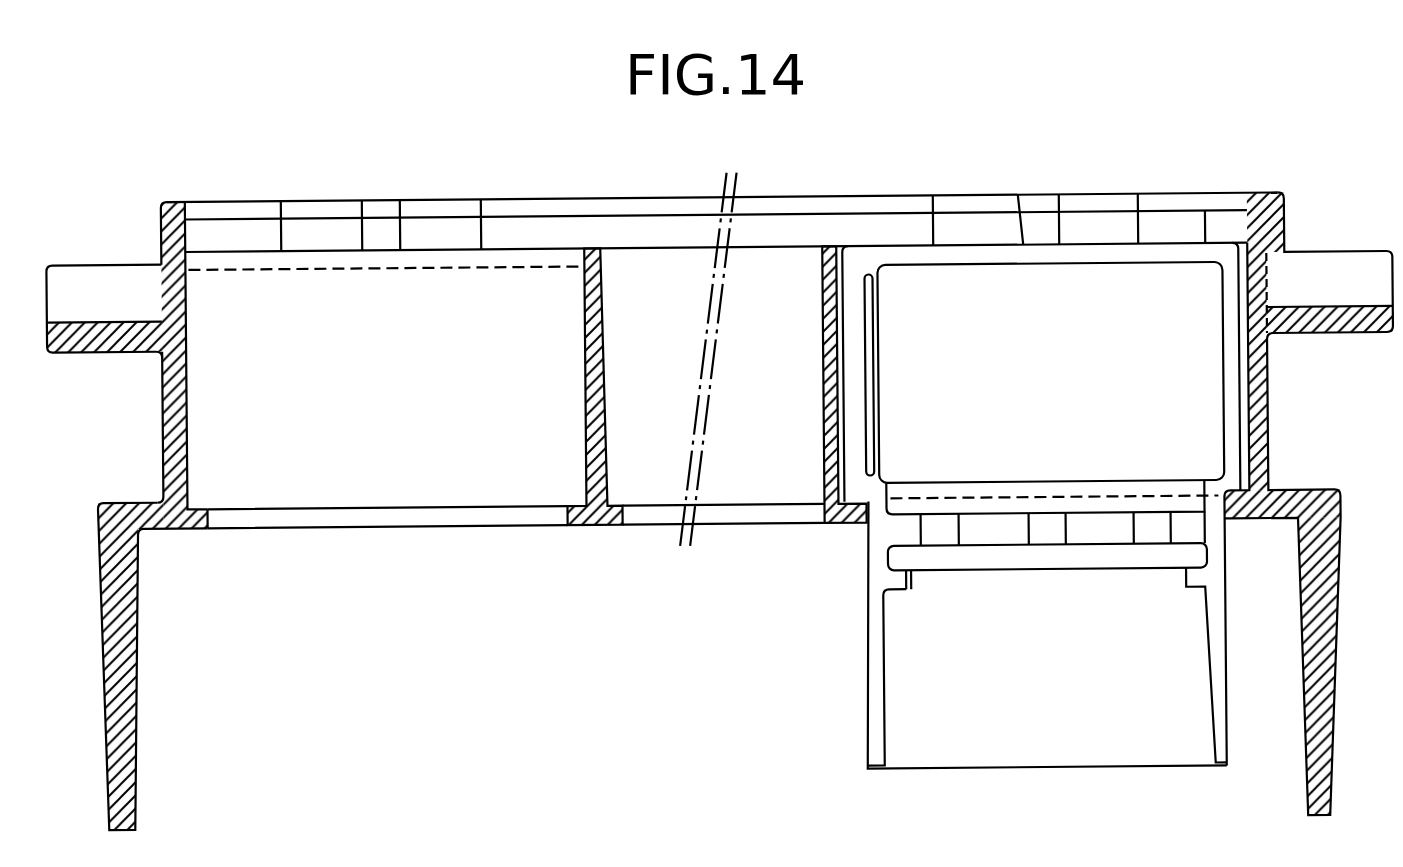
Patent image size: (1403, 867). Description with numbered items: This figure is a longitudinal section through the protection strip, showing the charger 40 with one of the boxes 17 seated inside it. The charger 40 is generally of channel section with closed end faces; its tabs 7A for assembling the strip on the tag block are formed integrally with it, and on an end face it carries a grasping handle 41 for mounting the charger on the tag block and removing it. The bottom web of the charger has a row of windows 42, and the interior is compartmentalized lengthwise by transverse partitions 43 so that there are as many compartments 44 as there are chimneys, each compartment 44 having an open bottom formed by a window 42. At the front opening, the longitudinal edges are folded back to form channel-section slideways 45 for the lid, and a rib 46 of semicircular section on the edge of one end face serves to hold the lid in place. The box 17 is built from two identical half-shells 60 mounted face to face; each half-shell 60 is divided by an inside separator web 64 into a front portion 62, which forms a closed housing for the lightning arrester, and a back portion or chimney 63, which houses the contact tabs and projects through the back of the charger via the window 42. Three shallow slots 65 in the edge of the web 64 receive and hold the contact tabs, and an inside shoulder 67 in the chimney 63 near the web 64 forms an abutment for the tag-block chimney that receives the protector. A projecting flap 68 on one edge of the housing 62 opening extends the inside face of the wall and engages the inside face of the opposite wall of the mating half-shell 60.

The tabs 7A is at (116, 655).
The box 17 is at (895, 240).
The charger 40 is at (151, 243).
The grasping handles 41 is at (123, 328).
The windows 42 is at (392, 516).
The transverse partitions 43 is at (608, 292).
The compartments 44 is at (504, 290).
The slideways 45 is at (175, 207).
The rib 46 is at (174, 244).
The half-shell 60 is at (864, 614).
The front portion 62 is at (1200, 402).
The back portion 63 is at (1183, 692).
The separator web 64 is at (982, 532).
The slots 65 is at (936, 539).
The inside shoulder 67 is at (898, 584).
The projecting flap 68 is at (877, 392).